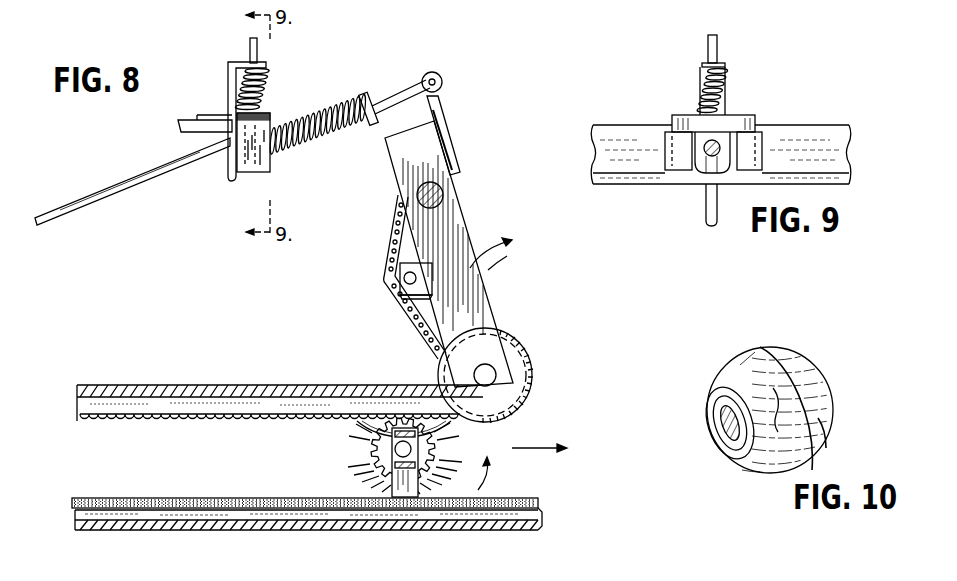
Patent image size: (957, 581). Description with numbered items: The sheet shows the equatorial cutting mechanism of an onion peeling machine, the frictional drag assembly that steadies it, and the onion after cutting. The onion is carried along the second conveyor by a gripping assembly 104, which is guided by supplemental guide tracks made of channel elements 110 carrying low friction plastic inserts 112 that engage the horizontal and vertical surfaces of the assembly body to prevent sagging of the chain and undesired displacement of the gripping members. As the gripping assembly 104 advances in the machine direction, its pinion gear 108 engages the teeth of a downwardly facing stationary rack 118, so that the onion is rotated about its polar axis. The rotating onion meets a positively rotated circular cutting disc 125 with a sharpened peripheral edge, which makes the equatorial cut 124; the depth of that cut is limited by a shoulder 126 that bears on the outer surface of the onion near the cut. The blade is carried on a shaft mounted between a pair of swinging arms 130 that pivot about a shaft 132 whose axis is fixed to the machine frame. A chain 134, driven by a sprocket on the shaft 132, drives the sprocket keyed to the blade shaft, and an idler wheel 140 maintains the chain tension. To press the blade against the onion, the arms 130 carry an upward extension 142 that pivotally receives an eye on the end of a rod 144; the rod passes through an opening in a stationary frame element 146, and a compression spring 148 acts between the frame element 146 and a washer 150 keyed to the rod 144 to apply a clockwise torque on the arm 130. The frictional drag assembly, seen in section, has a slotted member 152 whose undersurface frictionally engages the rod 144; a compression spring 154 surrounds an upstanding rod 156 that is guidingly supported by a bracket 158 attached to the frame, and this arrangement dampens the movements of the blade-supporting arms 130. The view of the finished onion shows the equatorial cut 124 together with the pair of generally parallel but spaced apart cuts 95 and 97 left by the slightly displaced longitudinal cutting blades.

In FIG. 10, the cut 95 is at (738, 421).
In FIG. 10, the cut 97 is at (825, 433).
In FIG. 8, the gripping assembly 104 is at (466, 444).
In FIG. 8, the pinion gear 108 is at (343, 449).
In FIG. 8, the channel elements 110 is at (333, 530).
In FIG. 8, the low friction plastic inserts 112 is at (222, 498).
In FIG. 8, the stationary rack 118 is at (232, 410).
In FIG. 10, the equatorial cut 124 is at (795, 372).
In FIG. 8, the circular cutting disc 125 is at (531, 392).
In FIG. 8, the shoulder 126 is at (528, 348).
In FIG. 8, the swinging arms 130 is at (463, 233).
In FIG. 8, the shaft 132 is at (443, 195).
In FIG. 8, the chain 134 is at (393, 234).
In FIG. 8, the idler wheel 140 is at (398, 283).
In FIG. 8, the upward extension 142 is at (443, 104).
In FIG. 8, the rod 144 is at (398, 100).
In FIG. 9, the rod 144 is at (704, 176).
In FIG. 8, the stationary frame element 146 is at (228, 141).
In FIG. 8, the compression spring 148 is at (300, 142).
In FIG. 8, the washer 150 is at (372, 98).
In FIG. 8, the member 152 is at (269, 118).
In FIG. 9, the member 152 is at (748, 120).
In FIG. 8, the compression spring 154 is at (265, 86).
In FIG. 9, the compression spring 154 is at (703, 80).
In FIG. 8, the upstanding rod 156 is at (259, 48).
In FIG. 9, the upstanding rod 156 is at (718, 52).
In FIG. 8, the bracket 158 is at (229, 65).
In FIG. 9, the bracket 158 is at (726, 85).